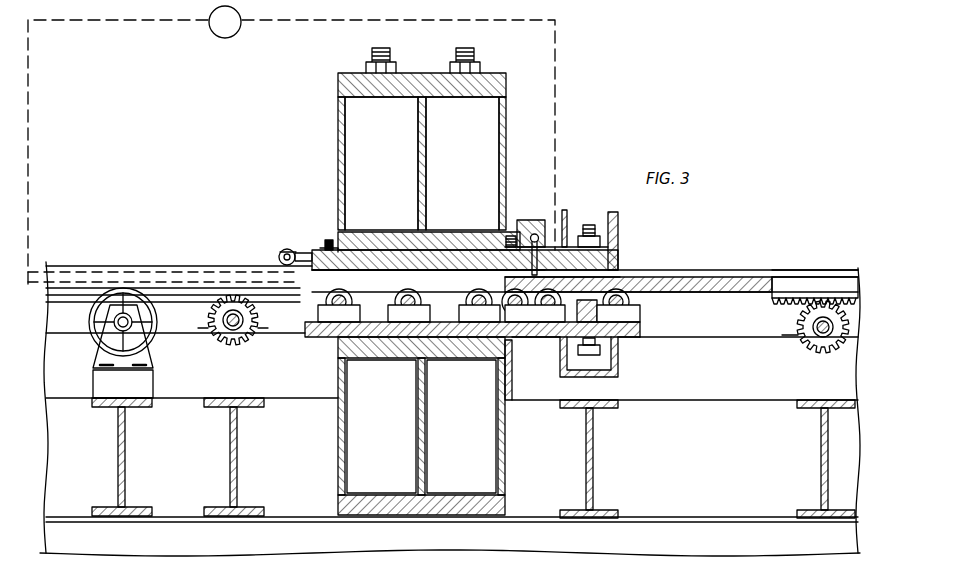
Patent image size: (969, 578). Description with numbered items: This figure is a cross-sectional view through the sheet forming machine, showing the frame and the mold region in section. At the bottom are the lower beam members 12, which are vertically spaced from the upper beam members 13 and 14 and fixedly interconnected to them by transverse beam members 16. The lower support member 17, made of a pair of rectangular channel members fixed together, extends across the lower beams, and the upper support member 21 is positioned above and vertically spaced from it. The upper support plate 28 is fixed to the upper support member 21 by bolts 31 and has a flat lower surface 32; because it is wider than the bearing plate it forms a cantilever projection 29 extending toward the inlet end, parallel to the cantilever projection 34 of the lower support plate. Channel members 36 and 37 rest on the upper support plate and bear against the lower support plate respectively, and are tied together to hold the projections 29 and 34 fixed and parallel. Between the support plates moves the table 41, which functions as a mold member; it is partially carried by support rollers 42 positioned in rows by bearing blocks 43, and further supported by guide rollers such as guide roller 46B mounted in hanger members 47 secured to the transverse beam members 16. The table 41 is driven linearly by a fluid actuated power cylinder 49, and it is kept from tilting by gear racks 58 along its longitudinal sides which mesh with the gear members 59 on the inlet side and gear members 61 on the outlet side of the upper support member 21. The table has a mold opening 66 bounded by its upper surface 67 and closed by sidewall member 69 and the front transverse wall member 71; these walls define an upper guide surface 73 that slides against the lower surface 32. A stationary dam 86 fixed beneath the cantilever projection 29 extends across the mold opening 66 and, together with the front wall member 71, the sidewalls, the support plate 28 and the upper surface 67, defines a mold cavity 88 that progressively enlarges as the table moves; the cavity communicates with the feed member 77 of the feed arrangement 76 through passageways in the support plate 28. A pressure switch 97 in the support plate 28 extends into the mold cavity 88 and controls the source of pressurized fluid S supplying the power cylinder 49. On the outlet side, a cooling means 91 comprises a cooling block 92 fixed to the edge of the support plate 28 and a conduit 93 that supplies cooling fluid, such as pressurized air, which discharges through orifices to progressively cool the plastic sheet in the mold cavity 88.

The source of pressurized fluid S is at (291, 148).
The lower beam members 12 is at (748, 524).
The upper beam members 13 is at (318, 400).
The upper beam members 14 is at (762, 402).
The transverse beam members 16 is at (126, 476).
The lower support member 17 is at (418, 430).
The upper support member 21 is at (420, 142).
The upper support plate 28 is at (410, 258).
The cantilever projection 29 is at (616, 258).
The bolts 31 is at (330, 240).
The lower surface 32 is at (400, 271).
The cantilever projection 34 is at (622, 342).
The channel member 36 is at (618, 226).
The channel member 37 is at (566, 372).
The movable table 41 is at (782, 262).
The support rollers 42 is at (462, 298).
The bearing blocks 43 is at (330, 312).
The guide roller 46B is at (92, 332).
The hanger members 47 is at (112, 351).
The power cylinder 49 is at (176, 266).
The gear racks 58 is at (850, 292).
The gear members 59 is at (800, 330).
The gear members 61 is at (236, 345).
The mold opening 66 is at (812, 270).
The upper surface 67 is at (740, 278).
The sidewall member 69 is at (762, 276).
The front transverse wall member 71 is at (500, 292).
The upper guide surface 73 is at (710, 276).
The clamp assembly 76 is at (548, 225).
The feed member 77 is at (514, 236).
The stationary dam 86 is at (590, 277).
The mold cavity 88 is at (540, 221).
The cooling means 91 is at (294, 238).
The cooling block 92 is at (320, 250).
The conduit 93 is at (279, 254).
The pressure switch 97 is at (523, 370).